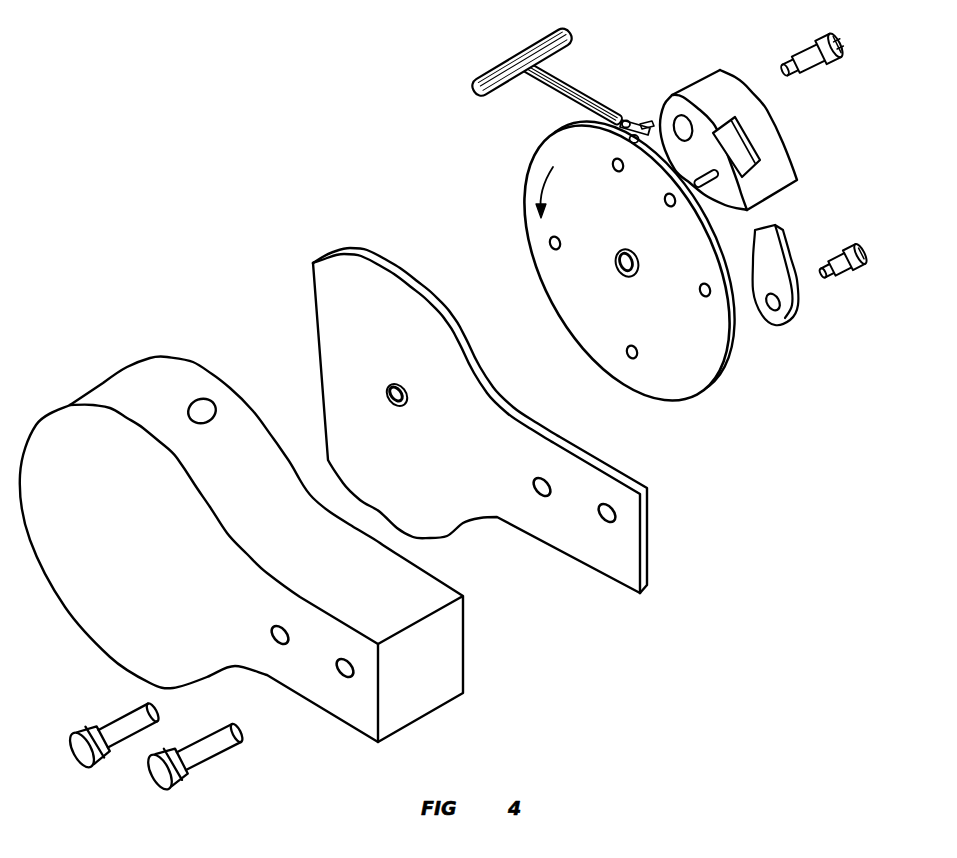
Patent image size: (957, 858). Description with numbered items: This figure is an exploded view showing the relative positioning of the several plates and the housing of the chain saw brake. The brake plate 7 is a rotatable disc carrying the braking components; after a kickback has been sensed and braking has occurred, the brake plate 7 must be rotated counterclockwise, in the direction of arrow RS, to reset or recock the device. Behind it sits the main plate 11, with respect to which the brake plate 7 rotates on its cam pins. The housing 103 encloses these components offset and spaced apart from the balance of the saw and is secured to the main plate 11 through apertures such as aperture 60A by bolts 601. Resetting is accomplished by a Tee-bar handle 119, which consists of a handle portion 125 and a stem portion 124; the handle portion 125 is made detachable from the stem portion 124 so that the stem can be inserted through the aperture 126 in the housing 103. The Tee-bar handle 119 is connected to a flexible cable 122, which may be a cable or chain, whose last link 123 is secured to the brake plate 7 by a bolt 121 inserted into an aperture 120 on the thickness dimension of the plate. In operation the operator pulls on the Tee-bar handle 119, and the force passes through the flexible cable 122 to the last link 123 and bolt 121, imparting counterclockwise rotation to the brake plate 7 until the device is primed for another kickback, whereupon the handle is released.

The brake plate 7 is at (677, 388).
The main plate 11 is at (602, 557).
The housing 103 is at (241, 550).
The aperture 60A is at (286, 648).
The bolts 601 is at (205, 753).
The aperture 126 is at (210, 398).
The Tee-bar handle 119 is at (548, 75).
The stem portion 124 is at (557, 97).
The handle portion 125 is at (535, 48).
The aperture 120 is at (626, 128).
The bolt 121 is at (640, 124).
The flexible cable 122 is at (630, 118).
The last link 123 is at (660, 147).